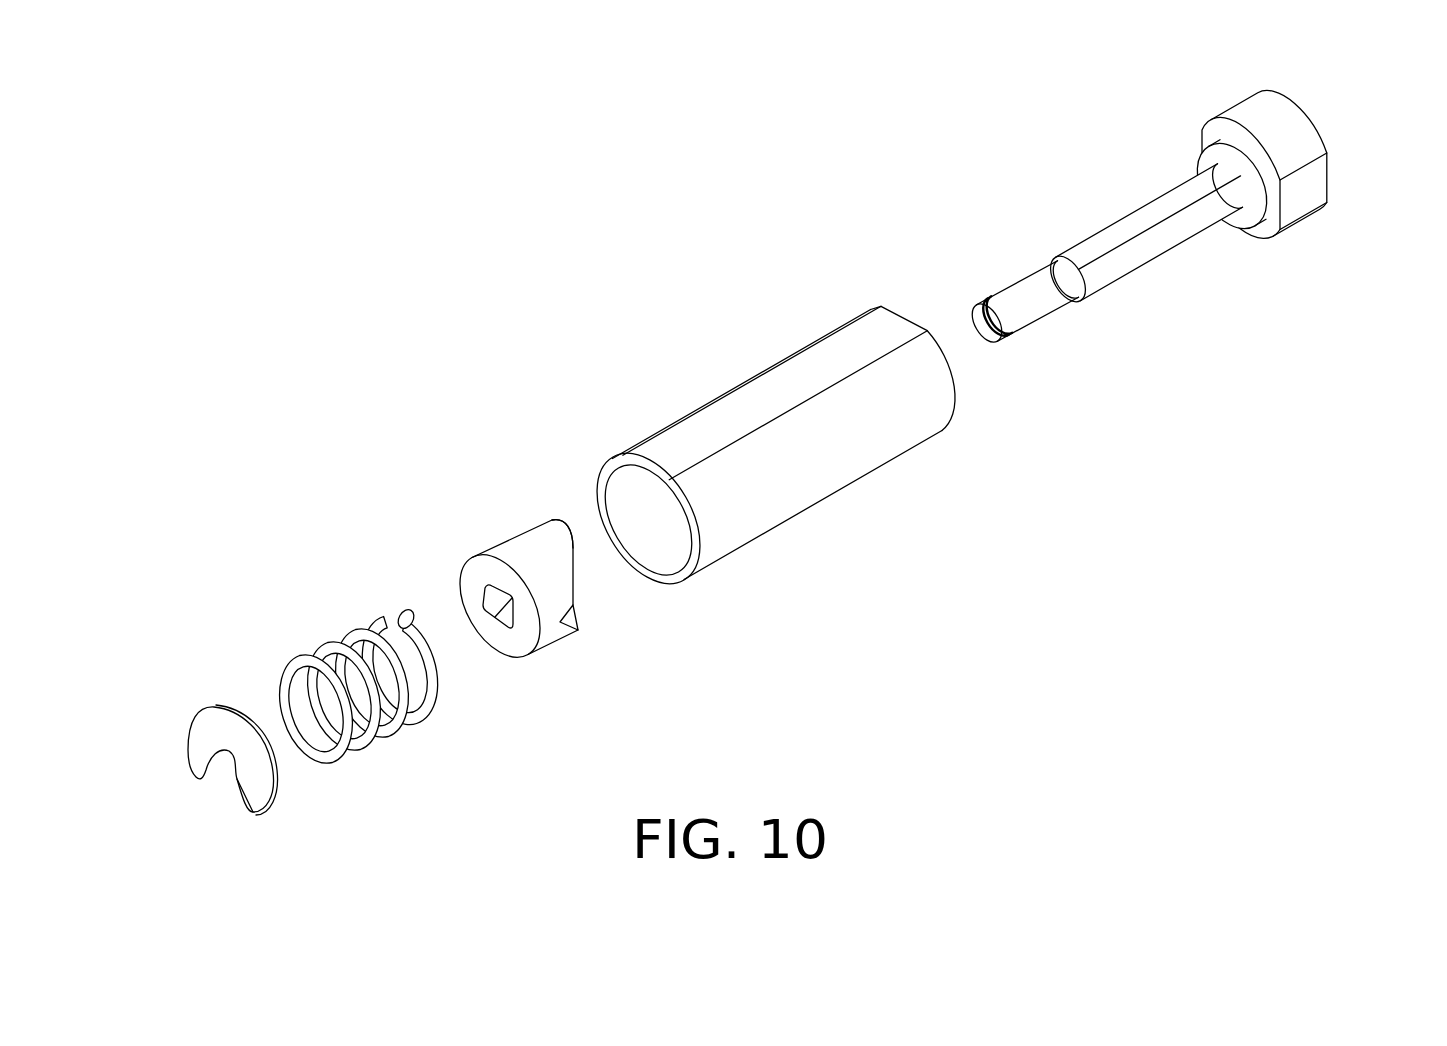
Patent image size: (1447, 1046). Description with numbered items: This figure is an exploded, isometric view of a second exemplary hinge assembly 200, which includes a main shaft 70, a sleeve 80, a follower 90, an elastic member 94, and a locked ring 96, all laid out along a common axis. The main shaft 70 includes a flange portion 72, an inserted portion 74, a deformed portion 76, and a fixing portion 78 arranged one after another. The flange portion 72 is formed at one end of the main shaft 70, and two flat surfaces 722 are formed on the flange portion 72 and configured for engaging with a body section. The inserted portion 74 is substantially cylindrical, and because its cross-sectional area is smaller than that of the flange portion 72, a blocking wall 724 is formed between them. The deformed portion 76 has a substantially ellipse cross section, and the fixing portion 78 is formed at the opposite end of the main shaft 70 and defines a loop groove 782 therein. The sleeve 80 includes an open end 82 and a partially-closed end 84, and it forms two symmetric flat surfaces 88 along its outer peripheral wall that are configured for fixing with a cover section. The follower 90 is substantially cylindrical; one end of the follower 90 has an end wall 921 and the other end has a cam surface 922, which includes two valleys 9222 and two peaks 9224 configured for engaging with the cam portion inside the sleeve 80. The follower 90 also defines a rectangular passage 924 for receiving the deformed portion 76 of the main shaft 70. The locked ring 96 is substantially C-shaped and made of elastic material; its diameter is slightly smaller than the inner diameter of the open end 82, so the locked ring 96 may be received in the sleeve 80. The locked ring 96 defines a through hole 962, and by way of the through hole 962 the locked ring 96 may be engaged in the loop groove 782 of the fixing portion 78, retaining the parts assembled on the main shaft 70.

The hinge assembly 200 is at (862, 200).
The main shaft 70 is at (1189, 95).
The flange portion 72 is at (1283, 108).
The flat surfaces 722 is at (1313, 180).
The blocking wall 724 is at (1213, 137).
The inserted portion 74 is at (1247, 203).
The deformed portion 76 is at (1107, 237).
The fixing portion 78 is at (1038, 302).
The loop groove 782 is at (997, 302).
The sleeve 80 is at (790, 335).
The open end 82 is at (687, 567).
The partially-closed end 84 is at (950, 413).
The flat surfaces 88 is at (713, 425).
The follower 90 is at (498, 512).
The end wall 921 is at (502, 632).
The cam surface 922 is at (779, 628).
The valleys 9222 is at (580, 627).
The peaks 9224 is at (566, 524).
The rectangular passage 924 is at (490, 592).
The elastic member 94 is at (328, 648).
The locked ring 96 is at (183, 711).
The through hole 962 is at (235, 767).